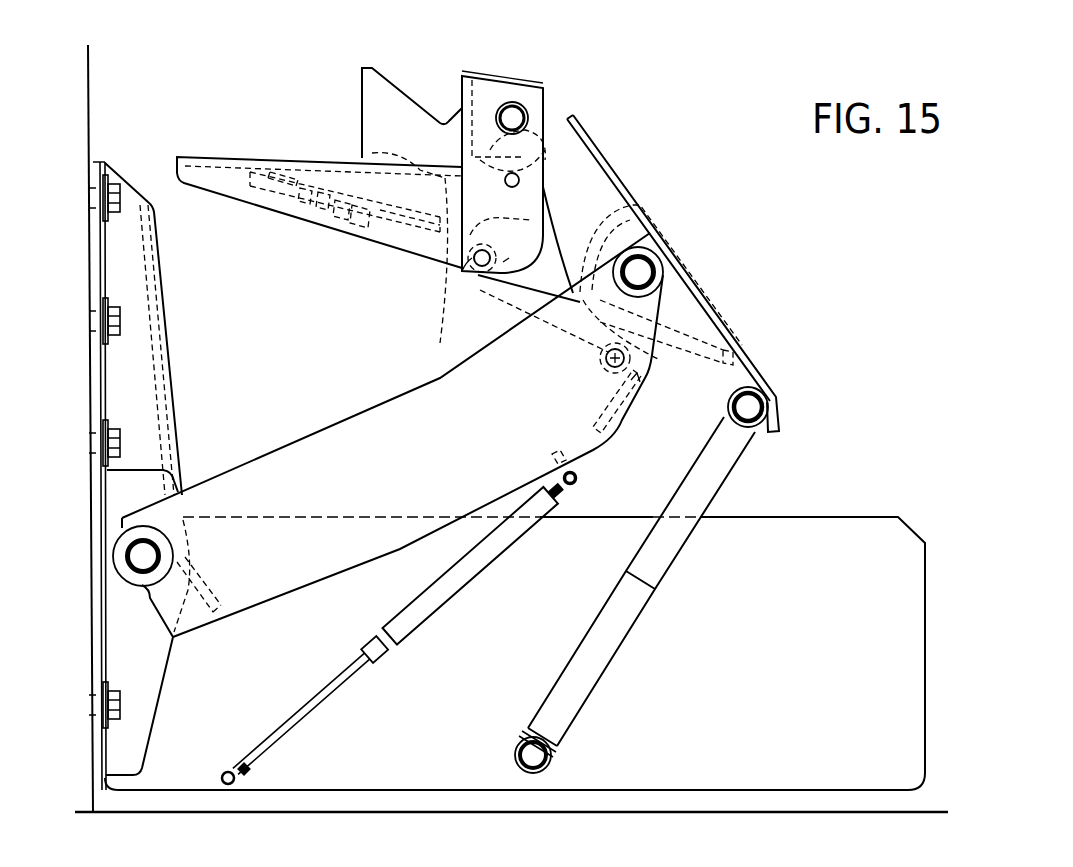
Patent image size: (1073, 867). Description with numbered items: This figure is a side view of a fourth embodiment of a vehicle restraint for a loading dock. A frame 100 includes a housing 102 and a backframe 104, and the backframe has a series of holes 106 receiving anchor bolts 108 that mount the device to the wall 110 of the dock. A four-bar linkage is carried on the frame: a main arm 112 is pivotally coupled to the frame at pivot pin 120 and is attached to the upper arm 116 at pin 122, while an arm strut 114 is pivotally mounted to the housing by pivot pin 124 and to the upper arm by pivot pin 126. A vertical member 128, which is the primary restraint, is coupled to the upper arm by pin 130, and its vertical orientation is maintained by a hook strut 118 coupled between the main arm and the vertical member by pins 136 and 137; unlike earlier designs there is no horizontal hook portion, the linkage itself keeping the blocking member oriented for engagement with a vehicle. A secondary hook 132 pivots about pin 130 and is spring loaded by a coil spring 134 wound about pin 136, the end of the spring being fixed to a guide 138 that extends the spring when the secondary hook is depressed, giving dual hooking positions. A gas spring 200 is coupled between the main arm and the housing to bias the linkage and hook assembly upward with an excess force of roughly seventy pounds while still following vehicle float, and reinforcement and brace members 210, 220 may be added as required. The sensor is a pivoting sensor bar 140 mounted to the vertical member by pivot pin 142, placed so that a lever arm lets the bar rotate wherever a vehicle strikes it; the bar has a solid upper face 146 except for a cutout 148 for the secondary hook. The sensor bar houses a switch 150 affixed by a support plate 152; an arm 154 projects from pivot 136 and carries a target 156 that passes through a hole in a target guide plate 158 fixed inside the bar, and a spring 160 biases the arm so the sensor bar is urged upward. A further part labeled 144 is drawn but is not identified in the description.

The frame 100 is at (946, 600).
The housing 102 is at (915, 692).
The backframe 104 is at (178, 392).
The holes 106 is at (138, 205).
The anchor bolts 108 is at (113, 320).
The wall 110 is at (94, 130).
The main arm 112 is at (337, 430).
The arm strut 114 is at (614, 644).
The upper arm 116 is at (674, 246).
The hook strut 118 is at (674, 238).
The pivot pin 120 is at (143, 530).
The pin 122 is at (638, 270).
The pivot pin 124 is at (535, 755).
The pivot pin 126 is at (748, 420).
The vertical member 128 is at (462, 88).
The pin 130 is at (515, 118).
The secondary hook 132 is at (362, 78).
The coil spring 134 is at (488, 272).
The pin 136 is at (505, 262).
The pin 137 is at (637, 388).
The guide 138 is at (433, 276).
The sensor bar 140 is at (258, 142).
The pivot pin 142 is at (515, 178).
The pivot shaft 144 is at (465, 280).
The solid upper face 146 is at (207, 157).
The cutout 148 is at (372, 153).
The switch 150 is at (306, 235).
The support plate 152 is at (285, 222).
The arm 154 is at (402, 232).
The target 156 is at (340, 238).
The target guide plate 158 is at (324, 232).
The spring 160 is at (362, 238).
The gas spring 200 is at (440, 598).
The reinforcement and brace member 210 is at (620, 420).
The reinforcement and brace member 220 is at (735, 352).